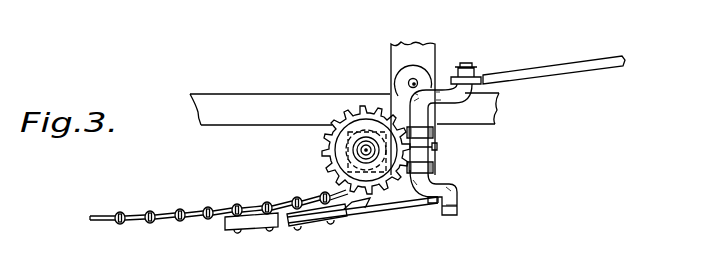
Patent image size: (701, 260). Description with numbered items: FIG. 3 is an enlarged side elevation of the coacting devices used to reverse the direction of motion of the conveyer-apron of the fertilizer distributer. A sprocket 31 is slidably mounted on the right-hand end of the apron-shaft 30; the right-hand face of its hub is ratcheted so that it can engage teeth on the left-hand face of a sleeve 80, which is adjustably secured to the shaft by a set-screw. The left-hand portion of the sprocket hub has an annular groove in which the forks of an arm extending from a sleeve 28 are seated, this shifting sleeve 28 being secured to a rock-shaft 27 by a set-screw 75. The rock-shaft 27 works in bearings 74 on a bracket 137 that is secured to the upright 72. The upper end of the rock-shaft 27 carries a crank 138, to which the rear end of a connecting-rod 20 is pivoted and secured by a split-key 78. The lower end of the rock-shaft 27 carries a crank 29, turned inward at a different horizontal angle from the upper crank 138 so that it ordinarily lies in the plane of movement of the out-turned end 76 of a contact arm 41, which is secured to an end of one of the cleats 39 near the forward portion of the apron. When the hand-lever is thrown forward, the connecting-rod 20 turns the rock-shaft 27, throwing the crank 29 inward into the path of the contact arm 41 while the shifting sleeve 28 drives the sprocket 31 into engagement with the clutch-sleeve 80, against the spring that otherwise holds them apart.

The connecting-rod 20 is at (538, 73).
The rock-shaft 27 is at (410, 100).
The sleeve 28 is at (428, 170).
The crank 29 is at (458, 198).
The apron-shaft 30 is at (350, 166).
The sprocket 31 is at (323, 142).
The cleat 39 is at (303, 226).
The contact arm 41 is at (372, 215).
The upright 72 is at (424, 54).
The bearings 74 is at (436, 130).
The set-screw 75 is at (437, 147).
The out-turned end 76 is at (432, 205).
The split-key 78 is at (460, 66).
The sleeve 80 is at (353, 149).
The bracket 137 is at (394, 83).
The crank 138 is at (479, 66).